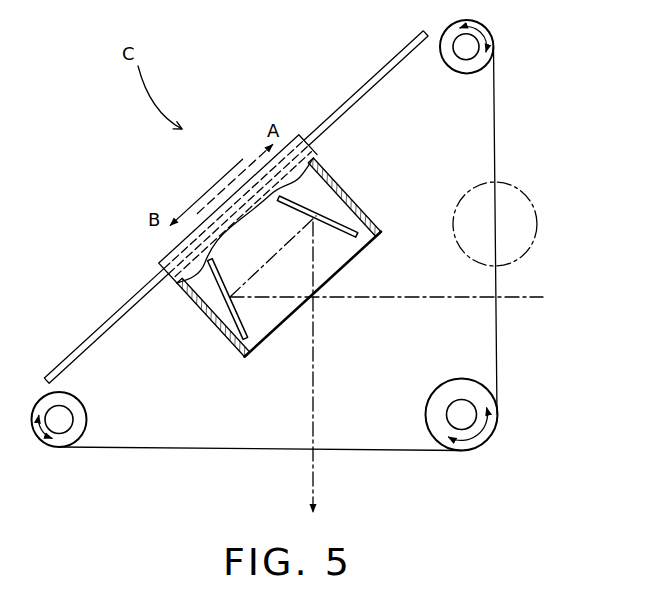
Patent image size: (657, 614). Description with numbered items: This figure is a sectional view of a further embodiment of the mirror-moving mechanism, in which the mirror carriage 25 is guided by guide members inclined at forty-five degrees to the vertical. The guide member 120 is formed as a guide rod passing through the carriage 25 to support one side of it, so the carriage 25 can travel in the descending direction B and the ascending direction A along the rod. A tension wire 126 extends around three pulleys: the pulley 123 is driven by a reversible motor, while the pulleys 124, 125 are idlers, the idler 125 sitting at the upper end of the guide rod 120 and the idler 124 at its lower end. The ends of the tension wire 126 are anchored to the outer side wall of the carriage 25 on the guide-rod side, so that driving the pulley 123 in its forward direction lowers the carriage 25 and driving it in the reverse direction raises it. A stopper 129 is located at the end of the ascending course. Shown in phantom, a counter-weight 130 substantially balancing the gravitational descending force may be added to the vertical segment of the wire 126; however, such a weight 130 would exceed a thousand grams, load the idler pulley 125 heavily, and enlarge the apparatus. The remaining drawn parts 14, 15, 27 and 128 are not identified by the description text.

The lower paddle / agitator blade 14 is at (229, 321).
The developer housing box 15 is at (367, 211).
The carriage 25 is at (348, 186).
The guide housing with hidden belt lines 27 is at (254, 206).
The guide member 120 is at (234, 207).
The pulley 123 is at (443, 392).
The pulley 124 is at (82, 420).
The pulley 125 is at (488, 60).
The tension wire 126 is at (497, 136).
The lower guide plate 128 is at (110, 308).
The stopper 129 is at (352, 88).
The counter-weight 130 is at (523, 208).